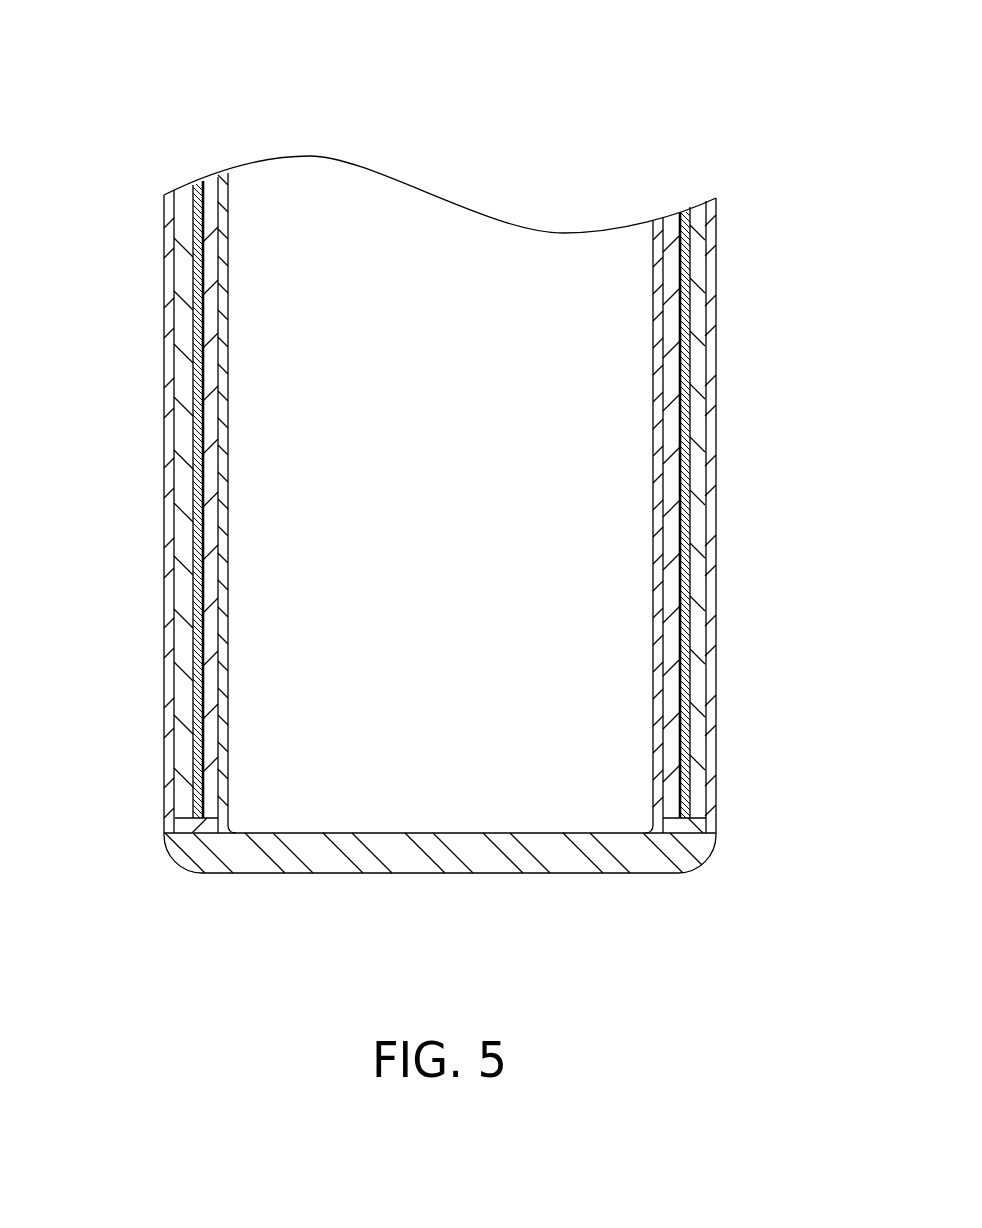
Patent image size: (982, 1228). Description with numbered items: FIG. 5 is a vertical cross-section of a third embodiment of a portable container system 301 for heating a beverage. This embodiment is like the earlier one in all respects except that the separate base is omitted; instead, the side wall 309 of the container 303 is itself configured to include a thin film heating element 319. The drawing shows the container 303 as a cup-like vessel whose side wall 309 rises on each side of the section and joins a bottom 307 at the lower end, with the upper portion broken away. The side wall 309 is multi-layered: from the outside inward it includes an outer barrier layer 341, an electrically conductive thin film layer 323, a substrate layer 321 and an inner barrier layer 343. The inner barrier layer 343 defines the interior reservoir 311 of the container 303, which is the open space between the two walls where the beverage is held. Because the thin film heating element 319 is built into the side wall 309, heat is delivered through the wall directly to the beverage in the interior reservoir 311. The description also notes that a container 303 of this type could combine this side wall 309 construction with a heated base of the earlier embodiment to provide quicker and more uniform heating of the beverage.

The container system 301 is at (514, 99).
The container 303 is at (165, 383).
The bottom wall 307 is at (358, 855).
The side wall 309 is at (717, 533).
The interior reservoir 311 is at (564, 393).
The thin film heating element 319 is at (690, 633).
The substrate layer 321 is at (195, 188).
The electrically conductive thin film layer 323 is at (208, 180).
The outer barrier layer 341 is at (180, 197).
The inner barrier layer 343 is at (212, 203).